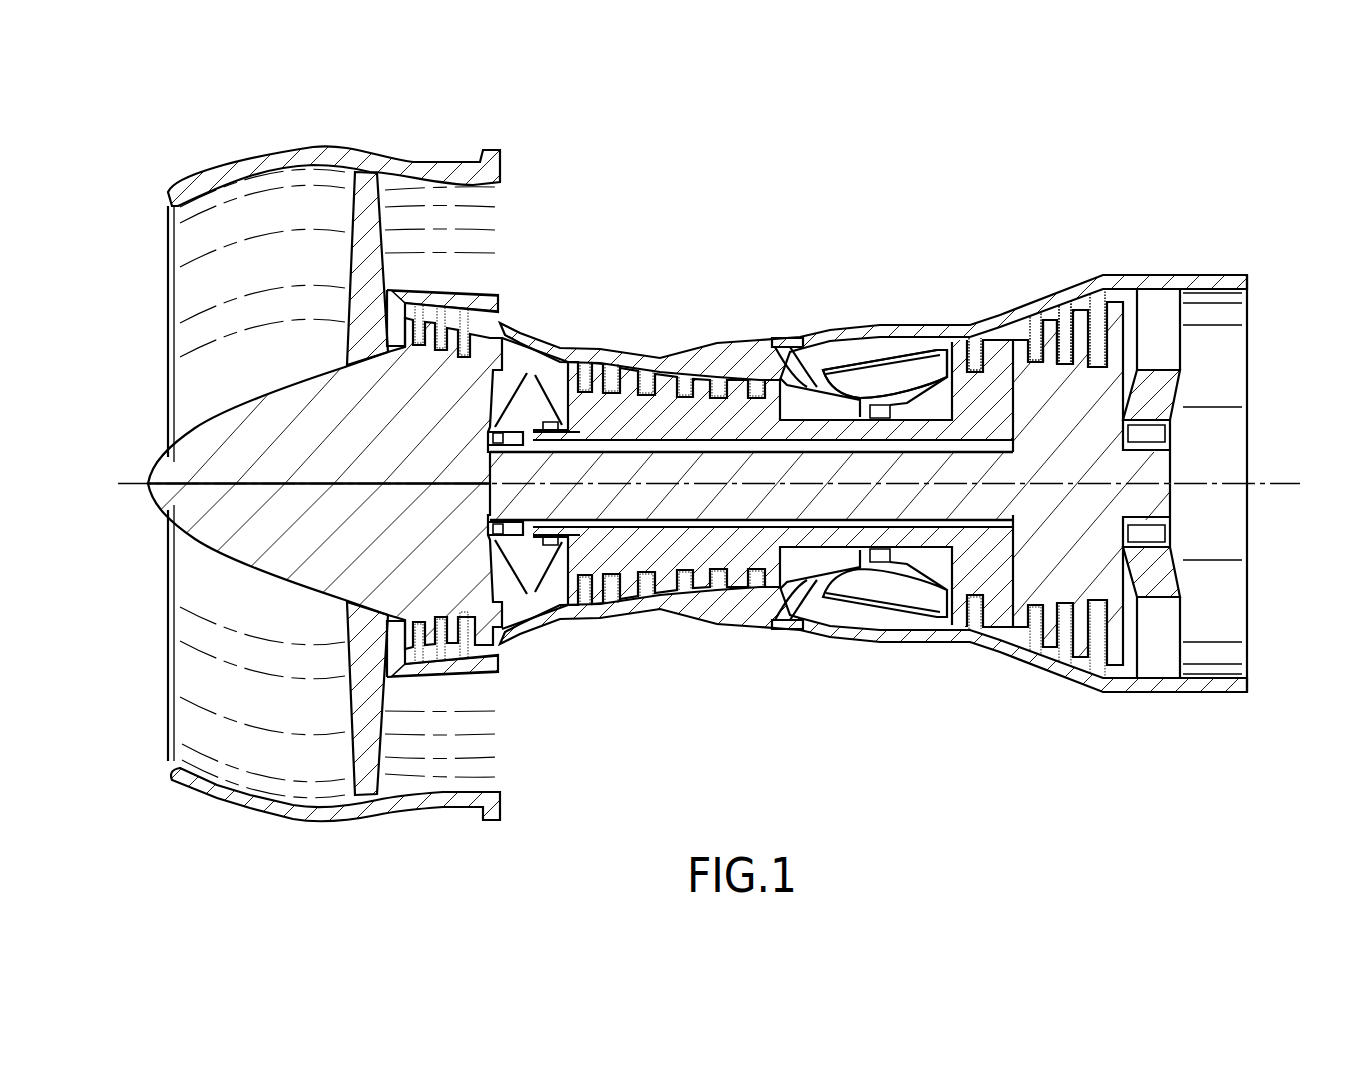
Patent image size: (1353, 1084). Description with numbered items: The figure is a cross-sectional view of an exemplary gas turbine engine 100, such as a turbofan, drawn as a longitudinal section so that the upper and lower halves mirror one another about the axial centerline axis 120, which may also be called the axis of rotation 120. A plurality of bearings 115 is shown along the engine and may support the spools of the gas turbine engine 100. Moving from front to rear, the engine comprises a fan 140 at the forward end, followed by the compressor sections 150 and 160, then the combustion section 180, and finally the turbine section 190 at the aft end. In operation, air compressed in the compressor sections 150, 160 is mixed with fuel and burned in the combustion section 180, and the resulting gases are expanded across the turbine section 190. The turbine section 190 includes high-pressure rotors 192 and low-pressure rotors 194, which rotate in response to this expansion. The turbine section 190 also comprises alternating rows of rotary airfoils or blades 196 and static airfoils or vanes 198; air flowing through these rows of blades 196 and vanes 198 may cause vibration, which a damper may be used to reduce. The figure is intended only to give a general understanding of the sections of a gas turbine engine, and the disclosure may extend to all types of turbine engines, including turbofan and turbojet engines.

The gas turbine engine 100 is at (966, 198).
The bearings 115 is at (548, 418).
The axial centerline axis 120 is at (130, 484).
The fan 140 is at (382, 226).
The compressor section 150 is at (492, 833).
The compressor section 160 is at (563, 640).
The combustion section 180 is at (803, 660).
The turbine section 190 is at (988, 708).
The high-pressure rotors 192 is at (987, 345).
The low-pressure rotors 194 is at (1110, 391).
The blades 196 is at (1050, 320).
The vanes 198 is at (1065, 312).